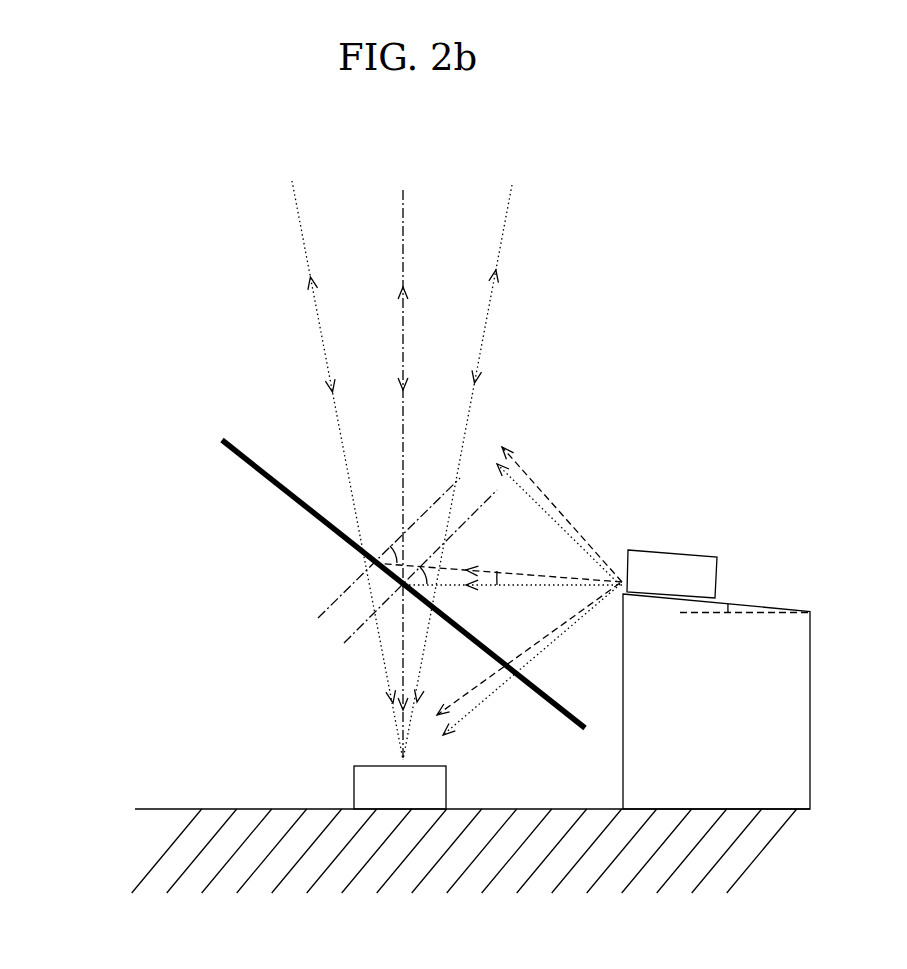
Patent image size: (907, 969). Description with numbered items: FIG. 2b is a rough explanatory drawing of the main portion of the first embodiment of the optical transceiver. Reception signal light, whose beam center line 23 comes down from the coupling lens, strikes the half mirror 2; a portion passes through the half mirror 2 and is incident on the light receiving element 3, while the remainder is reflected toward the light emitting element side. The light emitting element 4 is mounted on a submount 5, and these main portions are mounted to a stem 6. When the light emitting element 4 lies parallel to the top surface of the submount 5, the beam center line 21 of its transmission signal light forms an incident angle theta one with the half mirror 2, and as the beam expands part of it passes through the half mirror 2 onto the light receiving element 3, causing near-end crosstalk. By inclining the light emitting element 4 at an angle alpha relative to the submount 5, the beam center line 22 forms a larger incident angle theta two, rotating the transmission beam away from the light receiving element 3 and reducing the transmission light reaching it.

The half mirror 2 is at (248, 463).
The light receiving element 3 is at (354, 778).
The light emitting element 4 is at (695, 556).
The submount 5 is at (810, 708).
The stem 6 is at (285, 809).
The beam center line 21 is at (553, 583).
The beam center line 22 is at (530, 573).
The beam center line 23 is at (398, 350).